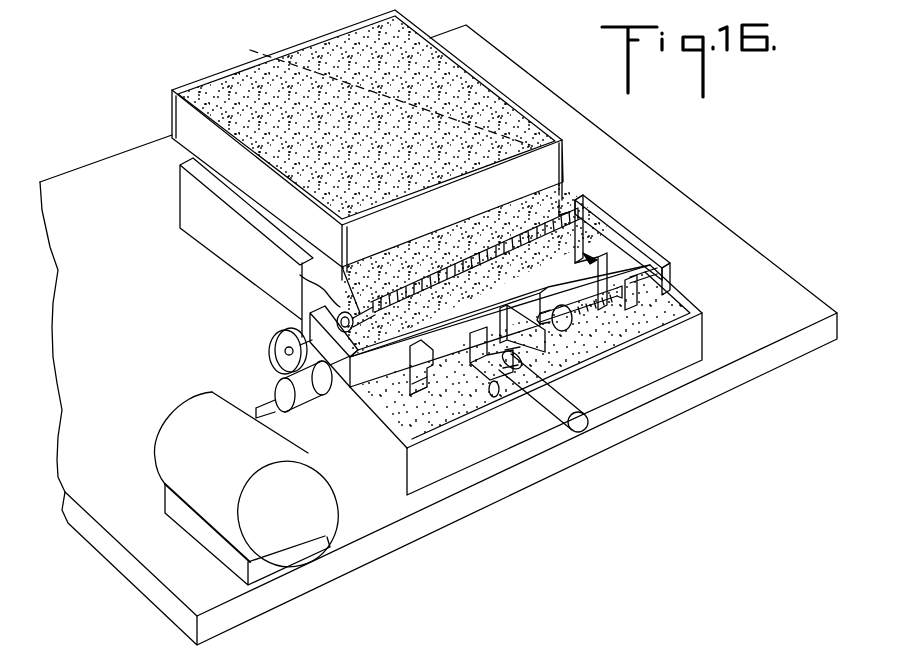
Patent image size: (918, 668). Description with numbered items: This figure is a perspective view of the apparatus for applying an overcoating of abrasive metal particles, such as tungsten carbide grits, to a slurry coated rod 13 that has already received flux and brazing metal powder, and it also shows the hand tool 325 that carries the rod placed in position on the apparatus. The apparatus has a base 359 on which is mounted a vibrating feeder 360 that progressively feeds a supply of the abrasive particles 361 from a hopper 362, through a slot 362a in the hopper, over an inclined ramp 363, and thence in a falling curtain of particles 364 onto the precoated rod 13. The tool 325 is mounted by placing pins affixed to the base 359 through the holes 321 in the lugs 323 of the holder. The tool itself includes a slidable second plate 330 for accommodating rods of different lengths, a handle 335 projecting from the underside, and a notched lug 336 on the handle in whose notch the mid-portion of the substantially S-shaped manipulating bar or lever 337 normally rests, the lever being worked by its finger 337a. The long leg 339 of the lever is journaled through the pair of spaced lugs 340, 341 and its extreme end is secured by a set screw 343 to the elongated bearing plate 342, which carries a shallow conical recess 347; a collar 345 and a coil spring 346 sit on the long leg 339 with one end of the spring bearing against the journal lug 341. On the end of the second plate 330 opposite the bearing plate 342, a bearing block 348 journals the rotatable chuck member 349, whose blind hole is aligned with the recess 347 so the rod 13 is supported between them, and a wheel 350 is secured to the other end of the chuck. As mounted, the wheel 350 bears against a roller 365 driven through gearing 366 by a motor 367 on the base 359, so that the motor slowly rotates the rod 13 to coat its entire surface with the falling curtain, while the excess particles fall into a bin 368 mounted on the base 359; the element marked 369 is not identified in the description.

The slurry coated rod 13 is at (580, 209).
The holes 321 is at (436, 377).
The lugs 323 is at (422, 379).
The tool 325 is at (374, 400).
The second plate 330 is at (600, 256).
The handle 335 is at (570, 425).
The notched lug 336 is at (483, 381).
The manipulating bar or lever 337 is at (512, 383).
The finger 337a is at (492, 396).
The long leg of the S bar 339 is at (552, 323).
The journal lug 340 is at (544, 322).
The journal lug 341 is at (638, 298).
The bearing plate 342 is at (633, 238).
The set screw 343 is at (657, 258).
The collar 345 is at (575, 313).
The coil spring 346 is at (637, 333).
The shallow conical recess 347 is at (598, 248).
The bearing block 348 is at (305, 323).
The rotatable chuck member 349 is at (300, 275).
The wheel 350 is at (272, 341).
The base 359 is at (140, 548).
The vibrating feeder 360 is at (196, 217).
The abrasive particles 361 is at (397, 119).
The hopper 362 is at (238, 82).
The slot 362a is at (455, 230).
The inclined ramp 363 is at (562, 207).
The falling curtain of particles 364 is at (455, 273).
The roller 365 is at (318, 396).
The gearing 366 is at (256, 398).
The motor 367 is at (311, 523).
The bin 368 is at (705, 343).
The frame base 369 is at (432, 386).